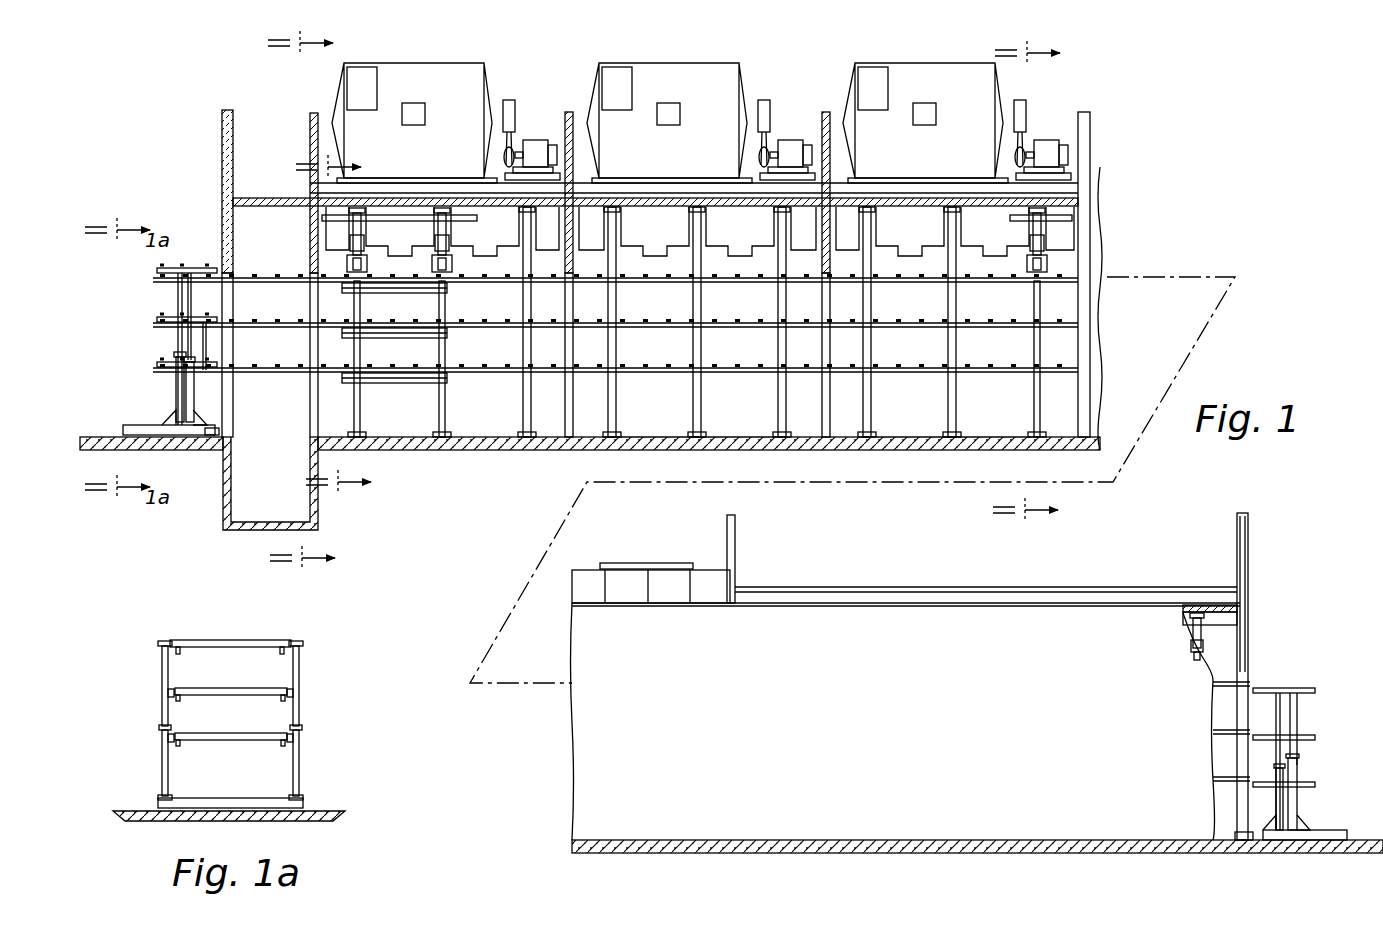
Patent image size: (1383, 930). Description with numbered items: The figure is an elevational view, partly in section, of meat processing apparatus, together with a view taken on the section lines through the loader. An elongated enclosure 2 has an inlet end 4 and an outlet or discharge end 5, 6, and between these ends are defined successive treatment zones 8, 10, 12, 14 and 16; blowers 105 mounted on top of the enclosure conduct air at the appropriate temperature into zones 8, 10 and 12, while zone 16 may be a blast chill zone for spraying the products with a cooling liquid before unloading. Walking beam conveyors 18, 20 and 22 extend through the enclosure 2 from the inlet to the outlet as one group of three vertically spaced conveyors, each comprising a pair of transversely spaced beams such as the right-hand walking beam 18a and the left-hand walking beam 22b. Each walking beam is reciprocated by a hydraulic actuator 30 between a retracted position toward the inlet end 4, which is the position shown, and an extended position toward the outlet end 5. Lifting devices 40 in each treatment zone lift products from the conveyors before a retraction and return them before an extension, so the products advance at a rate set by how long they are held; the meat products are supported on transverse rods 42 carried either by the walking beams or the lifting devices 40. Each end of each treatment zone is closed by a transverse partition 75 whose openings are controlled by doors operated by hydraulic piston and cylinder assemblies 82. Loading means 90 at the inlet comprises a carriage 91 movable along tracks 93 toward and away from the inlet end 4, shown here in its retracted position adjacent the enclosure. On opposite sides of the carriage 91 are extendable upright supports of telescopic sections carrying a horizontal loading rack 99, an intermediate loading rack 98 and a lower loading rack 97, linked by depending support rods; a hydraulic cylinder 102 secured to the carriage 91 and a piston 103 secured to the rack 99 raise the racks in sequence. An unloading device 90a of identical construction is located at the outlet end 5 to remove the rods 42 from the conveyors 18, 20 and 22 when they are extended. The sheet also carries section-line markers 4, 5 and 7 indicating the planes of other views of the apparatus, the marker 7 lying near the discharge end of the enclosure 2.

In FIG. 1, the elongated enclosure 2 is at (1069, 102).
In FIG. 1, the inlet end 4 is at (212, 243).
In FIG. 1, the outlet end 5 is at (1352, 714).
In FIG. 1, the outlet or discharge end 6 is at (248, 500).
In FIG. 1, the section line 7- 7 is at (1033, 282).
In FIG. 1, the treatment zone 8 is at (497, 420).
In FIG. 1, the treatment zone 10 is at (741, 418).
In FIG. 1, the treatment zone 12 is at (906, 420).
In FIG. 1, the treatment zone 14 is at (672, 815).
In FIG. 1, the treatment zone 16 is at (977, 865).
In FIG. 1, the walking beam conveyor 18 is at (653, 268).
In FIG. 1a, the right-hand walking beam 18a is at (283, 653).
In FIG. 1, the walking beam conveyor 20 is at (646, 322).
In FIG. 1, the walking beam conveyor 22 is at (646, 367).
In FIG. 1a, the left-hand walking beam 22b is at (172, 741).
In FIG. 1, the hydraulic actuator 30 is at (335, 295).
In FIG. 1, the lifting device 40 is at (375, 266).
In FIG. 1, the transverse rod 42 is at (466, 284).
In FIG. 1a, the transverse rod 42 is at (258, 640).
In FIG. 1, the transverse partition 75 is at (312, 402).
In FIG. 1, the hydraulic piston and cylinder assembly 82 is at (312, 132).
In FIG. 1, the loading means 90 is at (162, 410).
In FIG. 1, the unloading device 90a is at (1323, 812).
In FIG. 1, the carriage 91 is at (140, 426).
In FIG. 1a, the carriage 91 is at (226, 798).
In FIG. 1a, the tracks 93 is at (162, 817).
In FIG. 1a, the lower loading rack 97 is at (160, 738).
In FIG. 1a, the loading rack 98 is at (168, 694).
In FIG. 1a, the horizontal loading rack 99 is at (164, 640).
In FIG. 1a, the cylinder 102 is at (299, 740).
In FIG. 1a, the piston 103 is at (162, 656).
In FIG. 1, the blower 105 is at (455, 82).